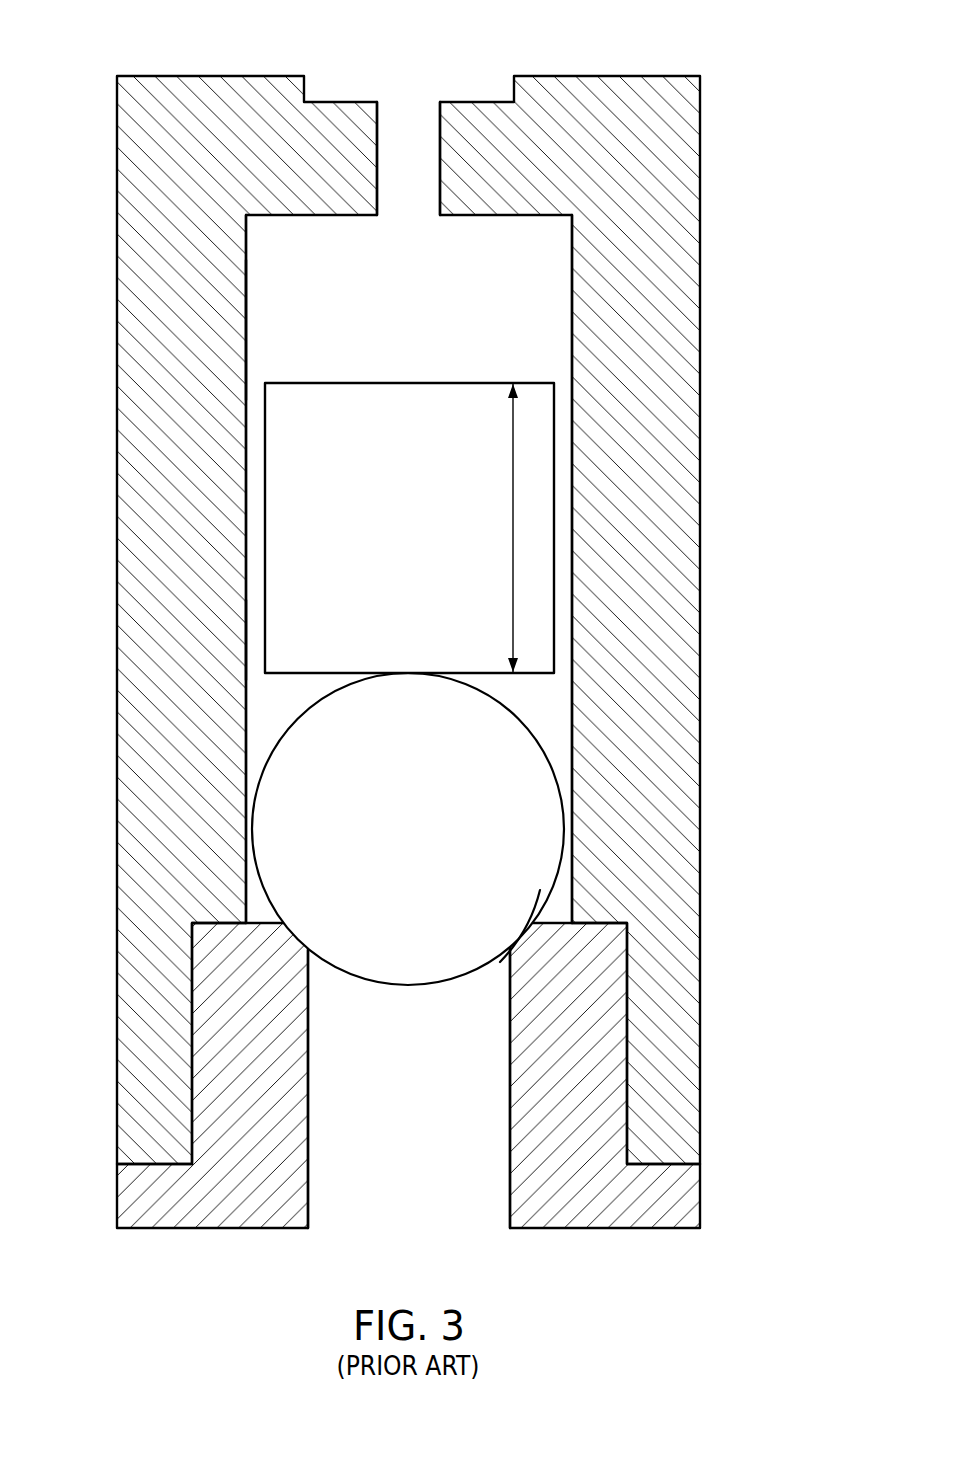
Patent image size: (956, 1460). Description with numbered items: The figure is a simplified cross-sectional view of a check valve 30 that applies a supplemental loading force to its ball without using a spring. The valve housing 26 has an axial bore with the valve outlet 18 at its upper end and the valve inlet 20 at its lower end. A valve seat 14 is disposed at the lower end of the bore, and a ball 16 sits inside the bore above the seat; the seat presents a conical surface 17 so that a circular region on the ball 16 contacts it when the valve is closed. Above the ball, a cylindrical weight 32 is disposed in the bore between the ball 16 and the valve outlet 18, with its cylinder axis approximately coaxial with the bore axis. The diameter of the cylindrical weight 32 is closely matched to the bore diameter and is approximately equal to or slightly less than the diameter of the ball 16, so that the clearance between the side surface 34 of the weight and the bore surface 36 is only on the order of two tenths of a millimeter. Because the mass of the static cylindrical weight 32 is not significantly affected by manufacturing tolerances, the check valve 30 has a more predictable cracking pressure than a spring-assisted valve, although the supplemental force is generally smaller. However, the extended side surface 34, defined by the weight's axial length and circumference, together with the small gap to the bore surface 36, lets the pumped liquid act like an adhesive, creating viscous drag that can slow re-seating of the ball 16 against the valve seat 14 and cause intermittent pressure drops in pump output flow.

The valve seat 14 is at (117, 1194).
The ball 16 is at (396, 841).
The conical surface 17 is at (515, 932).
The valve outlet 18 is at (424, 109).
The valve inlet 20 is at (407, 1133).
The valve housing 26 is at (117, 667).
The check valve 30 is at (438, 659).
The cylindrical weight 32 is at (395, 545).
The side surface 34 is at (250, 637).
The bore surface 36 is at (253, 309).